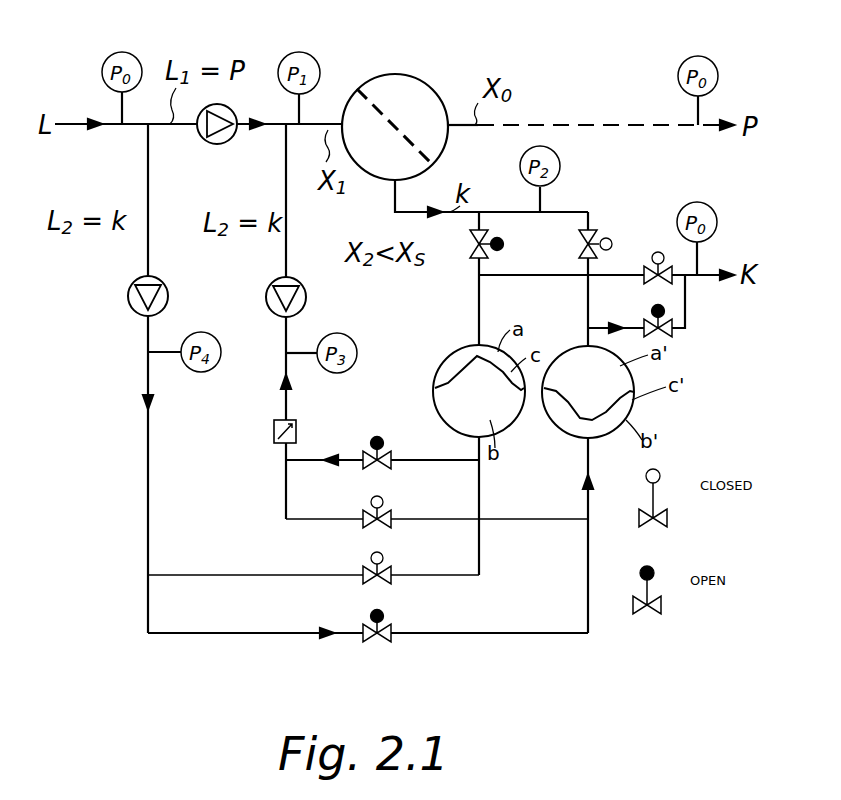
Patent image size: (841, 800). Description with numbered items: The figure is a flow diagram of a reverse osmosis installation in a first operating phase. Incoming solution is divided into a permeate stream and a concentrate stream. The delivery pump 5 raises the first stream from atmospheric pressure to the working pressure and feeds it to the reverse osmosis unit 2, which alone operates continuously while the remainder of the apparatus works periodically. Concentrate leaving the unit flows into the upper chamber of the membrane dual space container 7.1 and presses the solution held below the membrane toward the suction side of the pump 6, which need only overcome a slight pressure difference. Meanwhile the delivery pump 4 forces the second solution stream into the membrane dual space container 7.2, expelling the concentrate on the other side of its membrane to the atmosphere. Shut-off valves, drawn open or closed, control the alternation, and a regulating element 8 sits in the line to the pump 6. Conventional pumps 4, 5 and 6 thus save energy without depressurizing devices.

The reverse osmosis unit 2 is at (392, 74).
The delivery pump 4 is at (128, 297).
The delivery pump 5 is at (218, 144).
The pump 6 is at (266, 297).
The membrane dual space container 7.1 is at (442, 404).
The membrane dual space container 7.2 is at (552, 425).
The regulator 8 is at (274, 431).